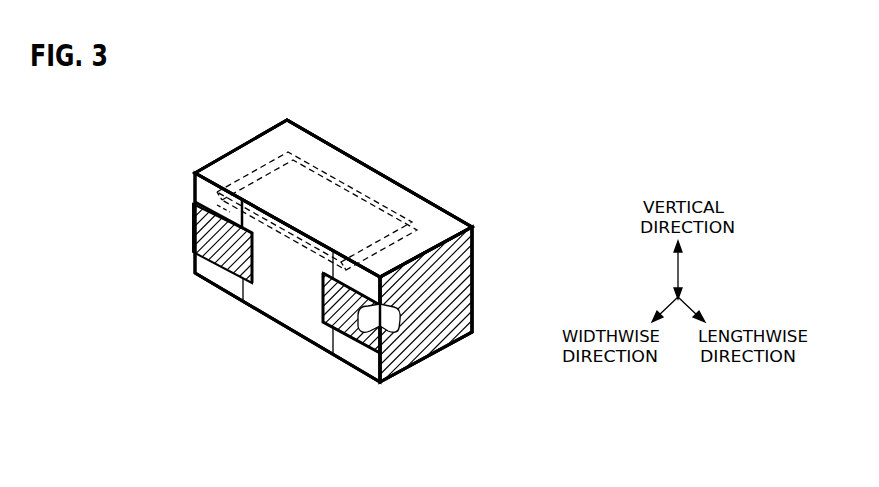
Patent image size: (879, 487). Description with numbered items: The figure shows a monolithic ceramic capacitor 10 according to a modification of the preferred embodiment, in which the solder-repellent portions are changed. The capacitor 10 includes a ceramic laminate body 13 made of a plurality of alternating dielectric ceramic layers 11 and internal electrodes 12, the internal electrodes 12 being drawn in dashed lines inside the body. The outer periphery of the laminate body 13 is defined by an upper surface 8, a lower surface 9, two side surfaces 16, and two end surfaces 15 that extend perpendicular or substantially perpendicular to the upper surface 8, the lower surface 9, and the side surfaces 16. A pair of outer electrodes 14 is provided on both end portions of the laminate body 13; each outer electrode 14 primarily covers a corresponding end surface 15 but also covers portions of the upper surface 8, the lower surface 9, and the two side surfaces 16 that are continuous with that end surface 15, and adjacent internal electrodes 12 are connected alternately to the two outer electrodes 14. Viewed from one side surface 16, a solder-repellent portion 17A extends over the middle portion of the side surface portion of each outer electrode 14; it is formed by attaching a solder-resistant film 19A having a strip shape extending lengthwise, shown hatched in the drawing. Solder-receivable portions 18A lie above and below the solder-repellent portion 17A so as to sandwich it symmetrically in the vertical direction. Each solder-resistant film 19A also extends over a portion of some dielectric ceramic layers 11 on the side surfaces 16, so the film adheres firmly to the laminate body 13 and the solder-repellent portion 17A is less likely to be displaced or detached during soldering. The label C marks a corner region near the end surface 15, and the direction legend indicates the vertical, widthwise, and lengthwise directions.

The monolithic ceramic capacitor 10 is at (401, 144).
The upper surface 8 is at (372, 191).
The lower surface 9 is at (310, 305).
The dielectric ceramic layer 11 is at (287, 266).
The internal electrode 12 is at (228, 270).
The ceramic laminate body 13 is at (283, 327).
The side surface 16 is at (290, 282).
The end surface 15 is at (398, 358).
The outer electrode 14 is at (96, 210).
The solder-repellent portion 17A is at (195, 234).
The solder-receivable portion 18A is at (197, 267).
The solder-resistant film 19A is at (193, 205).
The corner portion C is at (432, 320).